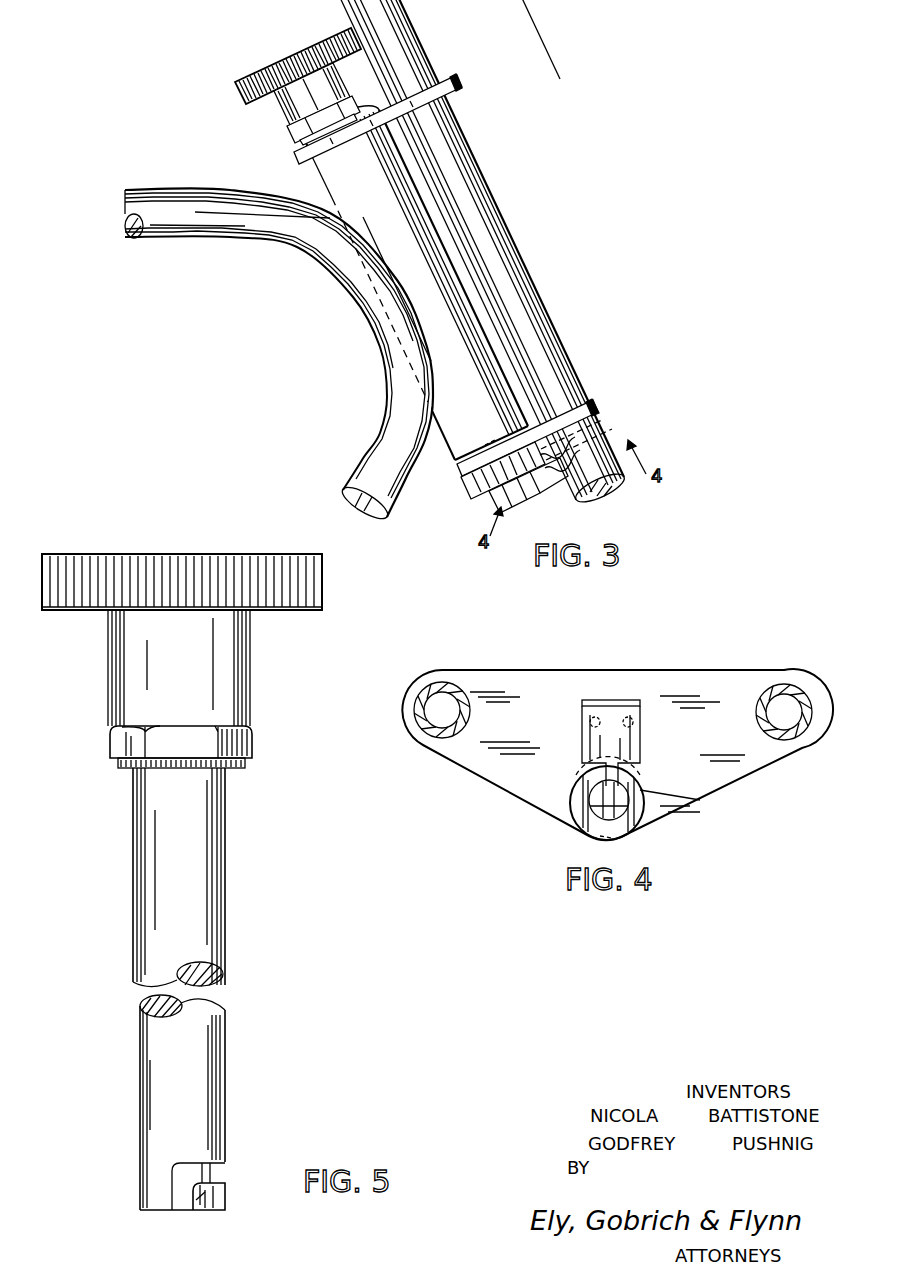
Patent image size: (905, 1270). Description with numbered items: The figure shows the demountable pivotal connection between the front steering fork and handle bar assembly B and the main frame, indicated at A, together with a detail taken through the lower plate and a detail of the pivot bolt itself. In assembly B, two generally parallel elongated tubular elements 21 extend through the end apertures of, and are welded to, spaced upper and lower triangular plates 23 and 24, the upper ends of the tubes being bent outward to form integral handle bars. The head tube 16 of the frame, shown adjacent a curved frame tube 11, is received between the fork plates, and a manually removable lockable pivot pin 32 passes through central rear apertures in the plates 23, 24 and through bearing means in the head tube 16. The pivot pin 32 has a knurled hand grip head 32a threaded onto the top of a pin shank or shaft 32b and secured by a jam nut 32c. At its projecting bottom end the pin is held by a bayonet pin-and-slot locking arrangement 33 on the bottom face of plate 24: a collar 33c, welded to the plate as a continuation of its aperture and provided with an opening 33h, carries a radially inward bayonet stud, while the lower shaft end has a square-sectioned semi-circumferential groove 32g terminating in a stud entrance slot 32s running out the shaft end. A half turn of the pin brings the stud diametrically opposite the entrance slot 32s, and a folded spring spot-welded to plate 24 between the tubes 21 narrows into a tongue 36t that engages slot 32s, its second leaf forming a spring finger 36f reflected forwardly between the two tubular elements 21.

In FIG. 3, the curved tube 11 is at (373, 464).
In FIG. 3, the head tube 16 is at (322, 177).
In FIG. 3, the tubular elements 21 is at (527, 283).
In FIG. 4, the tubular elements 21 is at (462, 690).
In FIG. 3, the upper triangular plate 23 is at (453, 76).
In FIG. 3, the lower triangular plate 24 is at (600, 404).
In FIG. 4, the lower triangular plate 24 is at (500, 796).
In FIG. 3, the pivot pin 32 is at (274, 60).
In FIG. 5, the pivot pin 32 is at (262, 756).
In FIG. 3, the knurled hand grip head 32a is at (246, 102).
In FIG. 5, the knurled hand grip head 32a is at (267, 614).
In FIG. 3, the pin shank or shaft 32b is at (500, 511).
In FIG. 4, the pin shank or shaft 32b is at (609, 800).
In FIG. 5, the pin shank or shaft 32b is at (212, 850).
In FIG. 3, the jam nut 32c is at (291, 132).
In FIG. 5, the jam nut 32c is at (253, 730).
In FIG. 5, the semi-circumferential slot or groove 32g is at (215, 1172).
In FIG. 5, the stud entrance slot 32s is at (190, 1208).
In FIG. 3, the bayonet pin-and-slot locking arrangement 33 is at (560, 452).
In FIG. 3, the collar 33c is at (468, 494).
In FIG. 4, the collar 33c is at (572, 822).
In FIG. 3, the hole 33h is at (487, 442).
In FIG. 4, the hole 33h is at (625, 843).
In FIG. 3, the spring finger 36f is at (613, 432).
In FIG. 4, the spring finger 36f is at (640, 735).
In FIG. 3, the tongue 36t is at (505, 513).
In FIG. 4, the tongue 36t is at (697, 802).
In FIG. 3, the tube assembly A is at (171, 212).
In FIG. 3, the front steering fork and handle bar assembly B is at (503, 200).